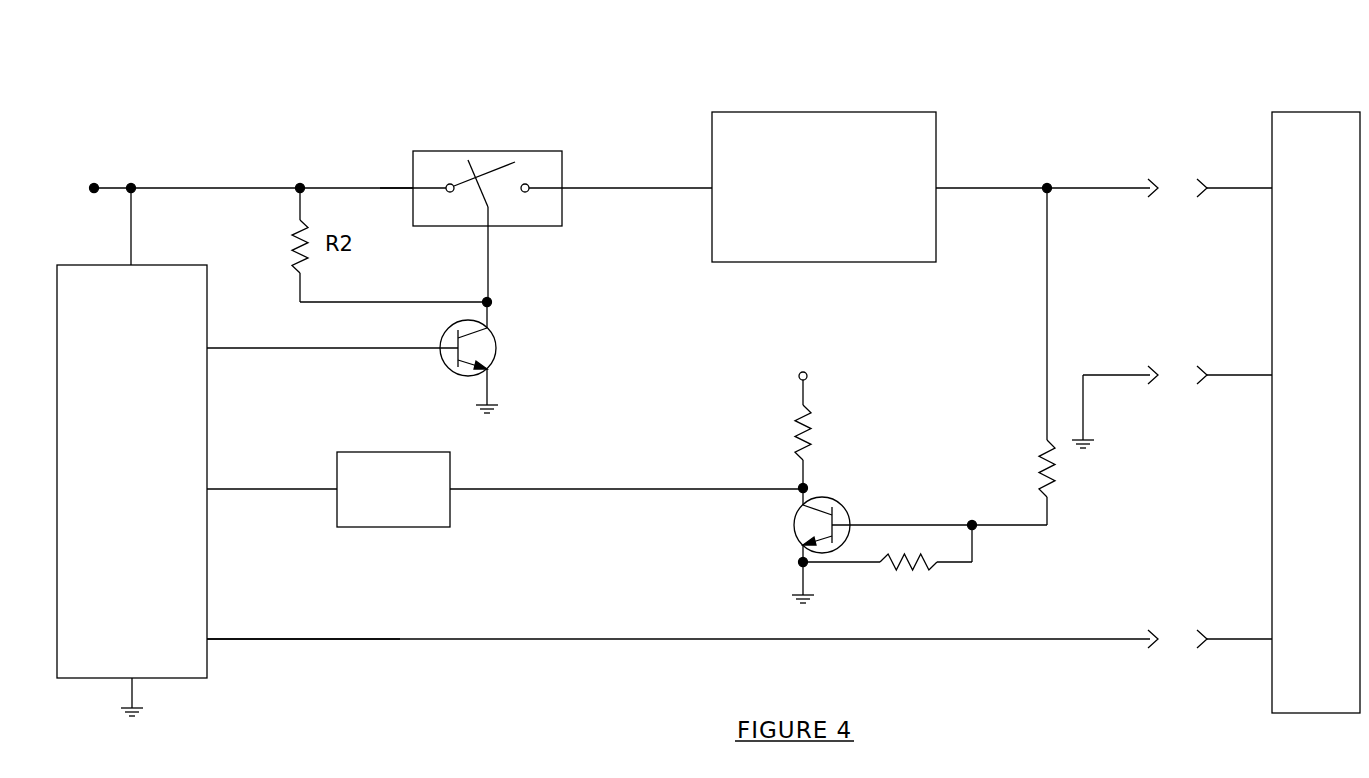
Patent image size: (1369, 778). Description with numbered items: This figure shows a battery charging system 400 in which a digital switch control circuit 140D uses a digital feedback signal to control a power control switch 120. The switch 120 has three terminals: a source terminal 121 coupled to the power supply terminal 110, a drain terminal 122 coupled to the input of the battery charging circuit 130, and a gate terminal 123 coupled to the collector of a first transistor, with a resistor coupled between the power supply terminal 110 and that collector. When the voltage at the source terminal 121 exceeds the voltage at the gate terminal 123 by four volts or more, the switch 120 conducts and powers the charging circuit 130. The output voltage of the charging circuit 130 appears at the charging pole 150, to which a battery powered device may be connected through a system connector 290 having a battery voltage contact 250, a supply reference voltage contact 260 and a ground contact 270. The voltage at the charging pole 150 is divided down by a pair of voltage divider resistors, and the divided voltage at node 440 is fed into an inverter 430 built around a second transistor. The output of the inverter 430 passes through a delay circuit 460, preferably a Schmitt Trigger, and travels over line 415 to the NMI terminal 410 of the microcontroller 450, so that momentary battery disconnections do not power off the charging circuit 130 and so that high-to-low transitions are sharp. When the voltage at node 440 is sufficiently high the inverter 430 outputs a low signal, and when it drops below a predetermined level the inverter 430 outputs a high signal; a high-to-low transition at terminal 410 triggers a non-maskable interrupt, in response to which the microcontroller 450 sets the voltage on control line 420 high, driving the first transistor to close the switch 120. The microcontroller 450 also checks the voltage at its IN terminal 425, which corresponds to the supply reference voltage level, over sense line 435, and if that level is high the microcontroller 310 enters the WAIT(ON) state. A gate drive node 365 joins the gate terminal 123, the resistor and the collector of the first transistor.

The power supply terminal 110 is at (94, 188).
The power control switch 120 is at (488, 151).
The source terminal 121 is at (412, 188).
The drain terminal 122 is at (562, 188).
The gate terminal 123 is at (488, 226).
The battery charging circuit 130 is at (825, 112).
The switch control circuit 140D is at (297, 591).
The charging pole 150 is at (1150, 197).
The DCIO contact 250 is at (1309, 205).
The VDD contact 260 is at (1272, 638).
The DGND contact 270 is at (1272, 375).
The system connector 290 is at (1315, 112).
The microcontroller 310 is at (170, 263).
The transistor Q1 gate drive node 365 is at (481, 294).
The battery charging system 400 is at (799, 686).
The NMI terminal 410 is at (207, 489).
The line 415 is at (562, 489).
The control line 420 is at (225, 347).
The IN terminal 425 is at (207, 639).
The inverter 430 is at (860, 468).
The VDD sense line 435 is at (562, 639).
The node 440 is at (975, 528).
The microcontroller 450 is at (125, 263).
The delay circuit 460 is at (393, 527).